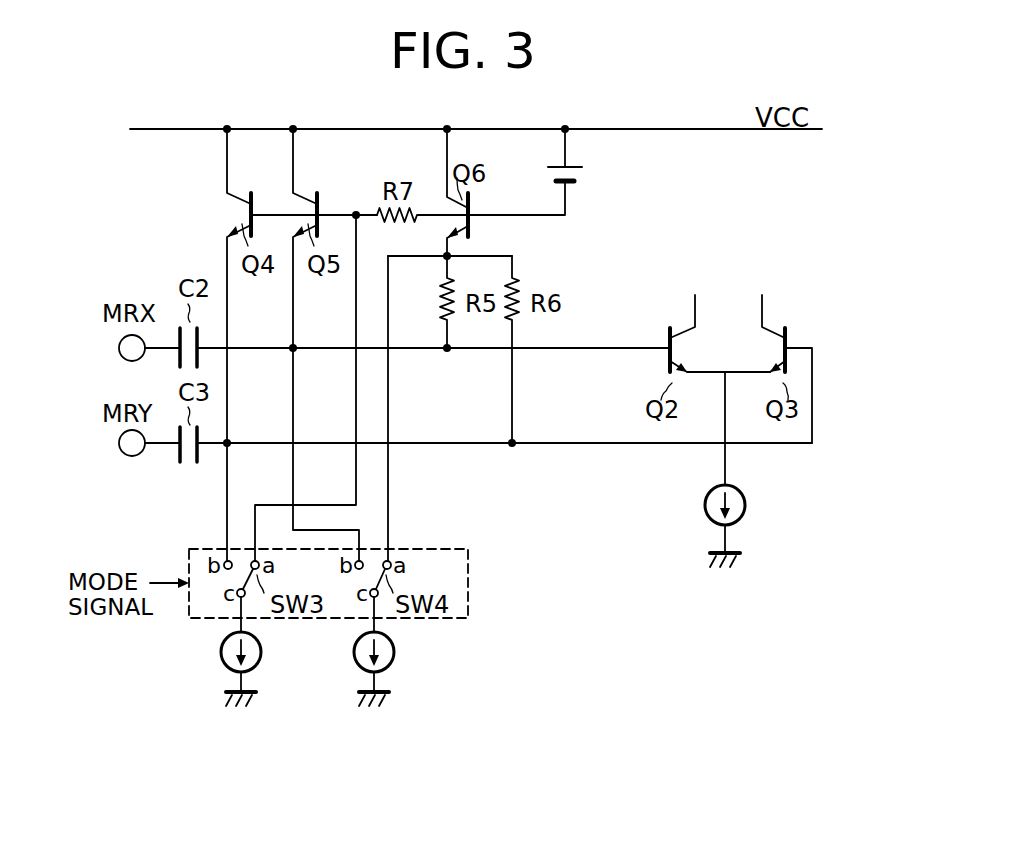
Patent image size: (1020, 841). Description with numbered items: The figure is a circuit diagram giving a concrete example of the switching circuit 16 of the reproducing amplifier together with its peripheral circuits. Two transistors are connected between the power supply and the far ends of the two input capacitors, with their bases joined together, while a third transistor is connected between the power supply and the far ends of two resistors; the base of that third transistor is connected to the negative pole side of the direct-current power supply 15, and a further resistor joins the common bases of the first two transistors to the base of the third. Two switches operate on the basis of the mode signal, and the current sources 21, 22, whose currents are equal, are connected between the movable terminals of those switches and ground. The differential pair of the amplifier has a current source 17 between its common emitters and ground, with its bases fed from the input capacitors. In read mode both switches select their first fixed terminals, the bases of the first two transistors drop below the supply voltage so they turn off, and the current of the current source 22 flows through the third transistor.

The direct-current power supply 15 is at (588, 177).
The switching circuit 16 is at (528, 567).
The current source 17 is at (746, 503).
The current source 21 is at (220, 653).
The current source 22 is at (353, 653).